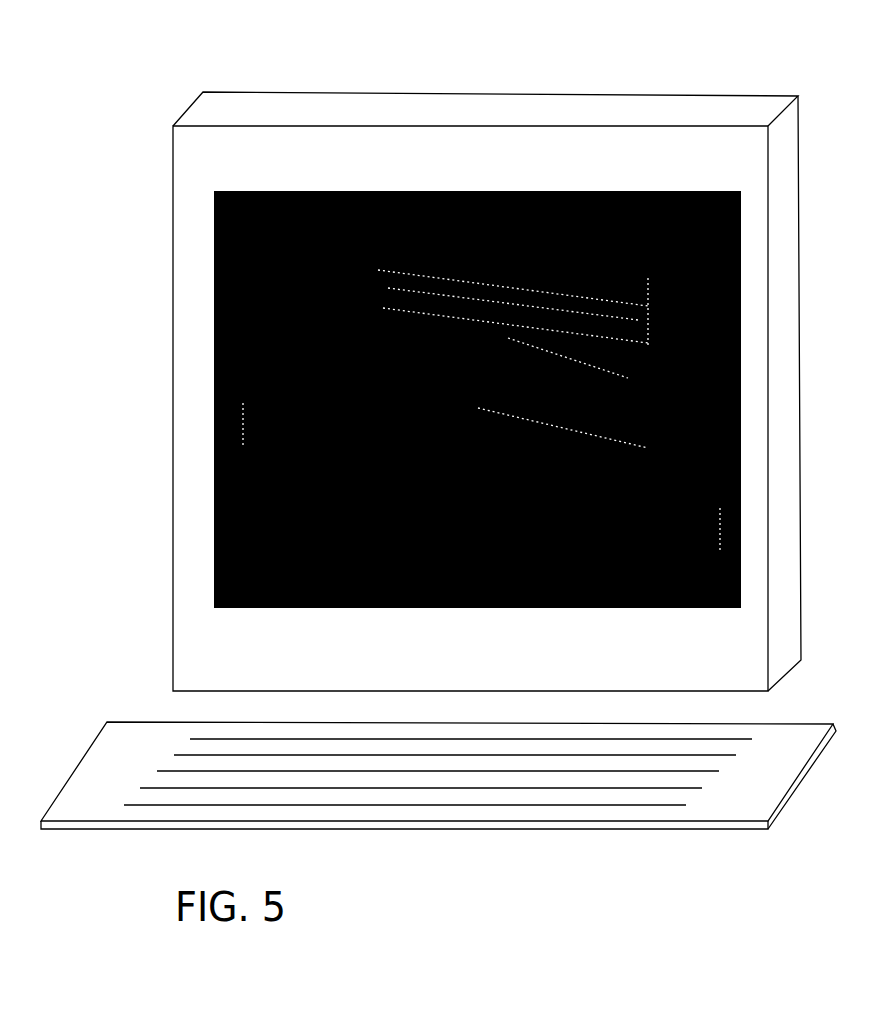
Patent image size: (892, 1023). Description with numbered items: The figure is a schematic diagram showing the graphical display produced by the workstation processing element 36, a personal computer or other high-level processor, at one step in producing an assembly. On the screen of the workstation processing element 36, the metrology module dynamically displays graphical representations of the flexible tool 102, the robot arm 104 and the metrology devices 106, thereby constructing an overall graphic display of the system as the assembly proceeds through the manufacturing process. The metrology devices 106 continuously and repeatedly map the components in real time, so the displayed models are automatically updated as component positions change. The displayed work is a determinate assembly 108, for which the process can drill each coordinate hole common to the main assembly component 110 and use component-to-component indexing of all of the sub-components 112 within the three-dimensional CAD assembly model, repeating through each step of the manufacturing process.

The workstation processing element 36 is at (480, 101).
The flexible tool 102 is at (361, 289).
The robot arm 104 is at (452, 418).
The metrology devices 106 is at (235, 439).
The determinate assembly 108 is at (526, 249).
The main assembly component 110 is at (640, 292).
The sub-components 112 is at (593, 386).